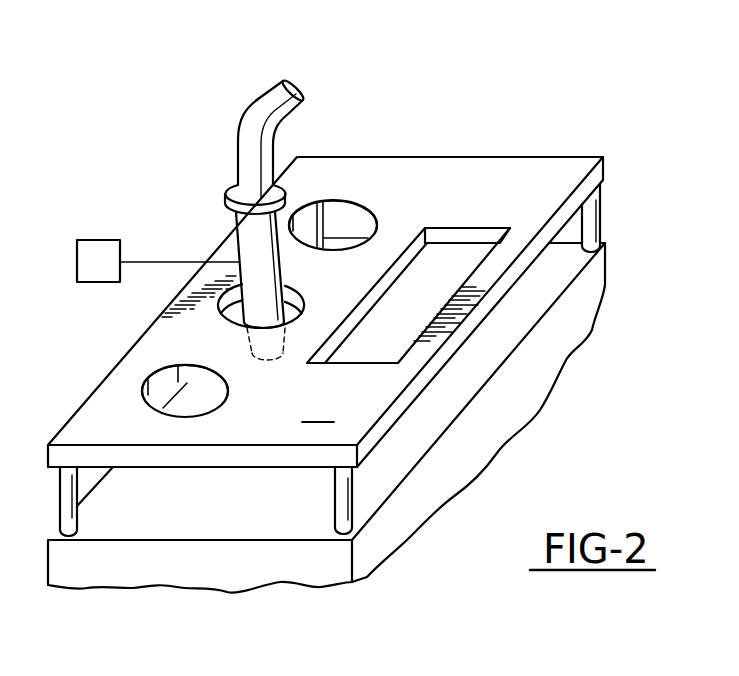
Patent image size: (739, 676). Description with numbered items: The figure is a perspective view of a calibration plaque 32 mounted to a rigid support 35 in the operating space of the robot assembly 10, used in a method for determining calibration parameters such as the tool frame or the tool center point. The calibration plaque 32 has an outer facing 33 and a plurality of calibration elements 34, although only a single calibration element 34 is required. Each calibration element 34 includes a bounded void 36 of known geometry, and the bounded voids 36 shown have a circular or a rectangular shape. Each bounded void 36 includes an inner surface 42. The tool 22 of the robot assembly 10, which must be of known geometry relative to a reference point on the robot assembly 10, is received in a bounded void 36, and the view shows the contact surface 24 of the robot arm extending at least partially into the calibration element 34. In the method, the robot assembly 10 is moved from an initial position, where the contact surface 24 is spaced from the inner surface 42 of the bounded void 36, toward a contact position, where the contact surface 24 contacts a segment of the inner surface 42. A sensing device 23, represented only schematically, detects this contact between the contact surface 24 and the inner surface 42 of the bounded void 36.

The robot assembly 10 is at (326, 331).
The tool 22 is at (238, 246).
The sensing device 23 is at (100, 248).
The contact surface 24 is at (240, 323).
The calibration plaque 32 is at (447, 358).
The outer facing 33 is at (325, 301).
The calibration element 34 is at (392, 213).
The rigid support 35 is at (155, 530).
The bounded void 36 is at (343, 223).
The inner surface 42 is at (214, 383).